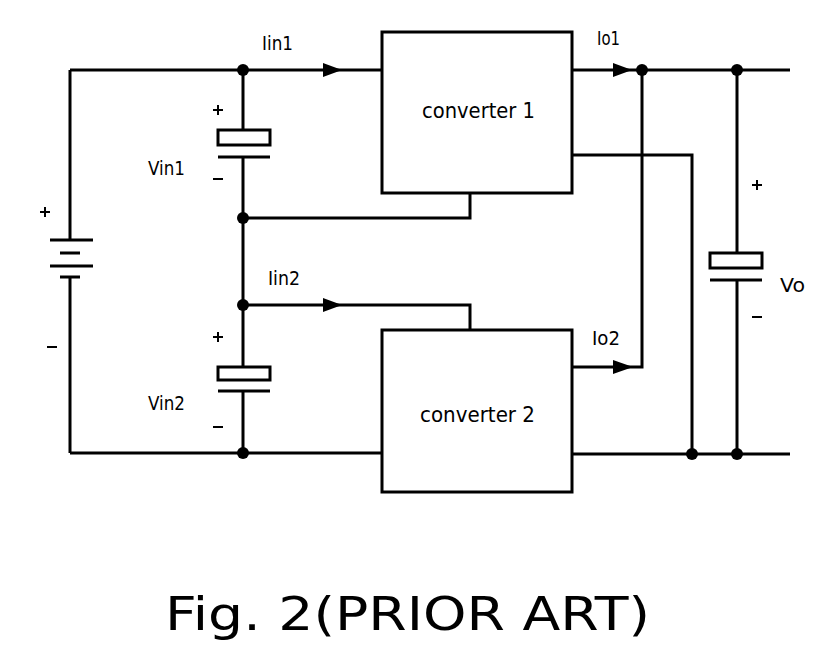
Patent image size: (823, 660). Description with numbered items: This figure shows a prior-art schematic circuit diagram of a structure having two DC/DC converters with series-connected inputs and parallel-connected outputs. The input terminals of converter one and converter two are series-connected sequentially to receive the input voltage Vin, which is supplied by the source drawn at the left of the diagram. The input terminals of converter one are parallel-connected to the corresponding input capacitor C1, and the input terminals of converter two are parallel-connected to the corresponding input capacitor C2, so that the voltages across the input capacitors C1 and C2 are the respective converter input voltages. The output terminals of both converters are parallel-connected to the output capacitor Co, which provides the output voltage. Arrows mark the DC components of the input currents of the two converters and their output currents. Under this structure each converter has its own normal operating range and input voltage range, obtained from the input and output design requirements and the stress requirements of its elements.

The input voltage Vin is at (52, 277).
The input capacitor C1 is at (258, 142).
The input capacitor C2 is at (258, 379).
The output capacitor Co is at (731, 250).